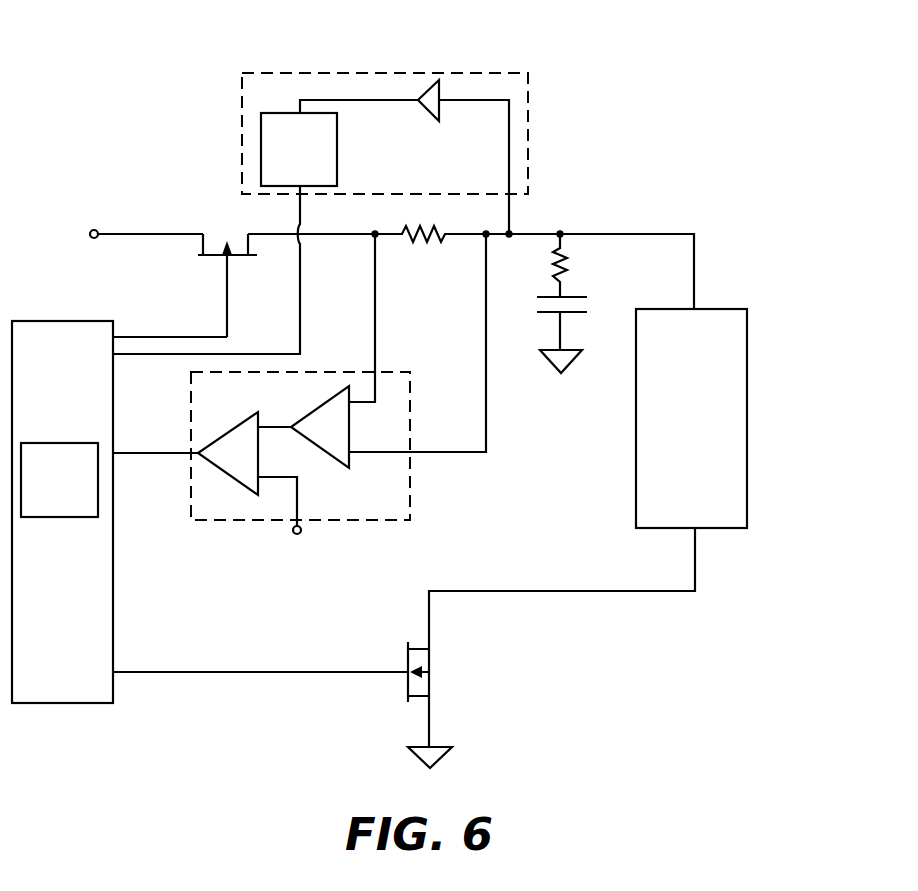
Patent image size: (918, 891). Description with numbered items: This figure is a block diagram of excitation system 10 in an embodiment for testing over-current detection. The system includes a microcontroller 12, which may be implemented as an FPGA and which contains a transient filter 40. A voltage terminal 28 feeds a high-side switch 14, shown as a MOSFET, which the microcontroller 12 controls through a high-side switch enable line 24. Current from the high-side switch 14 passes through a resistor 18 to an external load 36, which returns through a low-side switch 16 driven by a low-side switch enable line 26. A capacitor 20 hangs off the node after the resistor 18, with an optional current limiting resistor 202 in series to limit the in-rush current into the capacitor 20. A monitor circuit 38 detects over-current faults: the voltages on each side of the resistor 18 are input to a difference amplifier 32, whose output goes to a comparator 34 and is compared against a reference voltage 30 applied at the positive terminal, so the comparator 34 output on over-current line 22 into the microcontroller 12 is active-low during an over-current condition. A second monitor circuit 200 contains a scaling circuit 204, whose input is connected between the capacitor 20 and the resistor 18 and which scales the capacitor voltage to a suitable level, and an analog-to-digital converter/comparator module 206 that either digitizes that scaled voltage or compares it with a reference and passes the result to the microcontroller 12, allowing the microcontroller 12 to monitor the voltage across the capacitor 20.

The excitation system 10 is at (698, 67).
The microcontroller 12 is at (49, 365).
The high-side switch 14 is at (237, 258).
The low-side switch 16 is at (408, 669).
The resistor 18 is at (428, 227).
The capacitor 20 is at (573, 314).
The over-current line 22 is at (127, 453).
The high-side switch enable line 24 is at (192, 336).
The low-side switch enable line 26 is at (210, 672).
The voltage terminal 28 is at (93, 230).
The reference voltage 30 is at (300, 536).
The difference amplifier 32 is at (310, 439).
The comparator 34 is at (220, 465).
The external load 36 is at (679, 429).
The monitor circuit 38 is at (391, 372).
The transient filter 40 is at (47, 491).
The second monitor circuit 200 is at (468, 73).
The current limiting resistor 202 is at (568, 268).
The scaling circuit 204 is at (431, 78).
The analog-to-digital converter/comparator module 206 is at (283, 162).